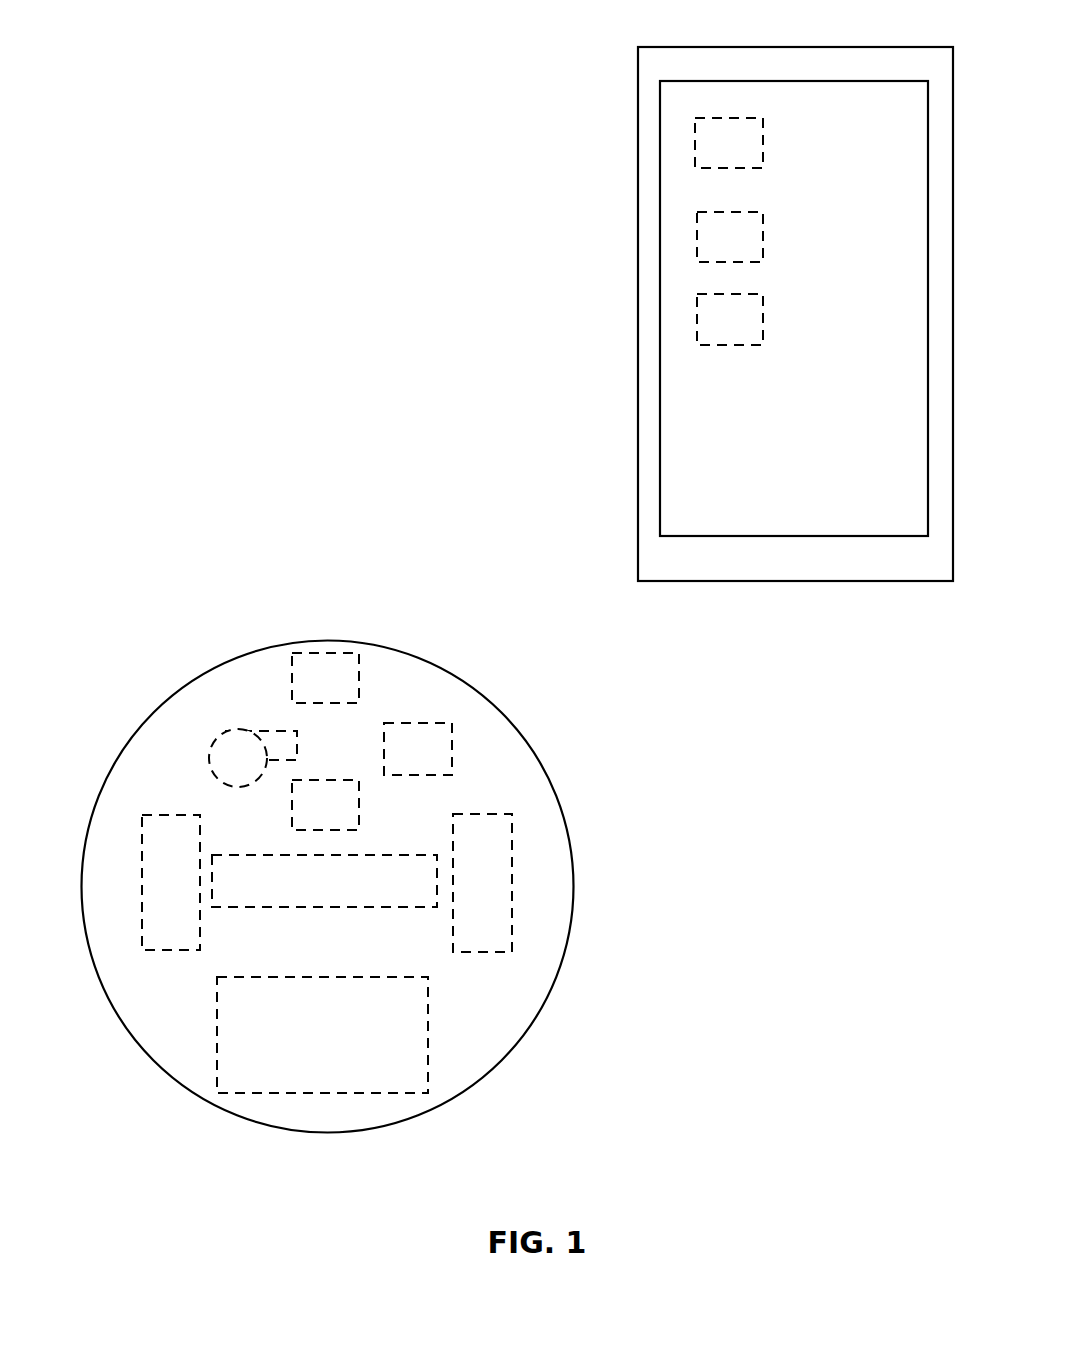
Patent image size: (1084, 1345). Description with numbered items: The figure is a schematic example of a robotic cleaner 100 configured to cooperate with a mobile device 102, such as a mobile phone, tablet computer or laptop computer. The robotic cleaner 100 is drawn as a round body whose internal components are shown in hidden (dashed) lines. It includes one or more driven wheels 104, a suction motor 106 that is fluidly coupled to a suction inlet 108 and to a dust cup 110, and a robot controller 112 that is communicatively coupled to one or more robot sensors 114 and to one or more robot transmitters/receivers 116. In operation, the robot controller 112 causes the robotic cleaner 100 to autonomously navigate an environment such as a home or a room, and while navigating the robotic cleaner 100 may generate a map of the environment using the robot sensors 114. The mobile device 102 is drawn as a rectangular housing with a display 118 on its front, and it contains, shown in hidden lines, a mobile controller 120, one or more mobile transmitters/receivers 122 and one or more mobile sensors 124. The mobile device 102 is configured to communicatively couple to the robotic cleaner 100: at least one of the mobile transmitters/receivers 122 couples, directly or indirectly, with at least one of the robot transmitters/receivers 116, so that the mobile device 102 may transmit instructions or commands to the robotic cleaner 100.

The robotic cleaner 100 is at (127, 625).
The mobile device 102 is at (537, 98).
The driven wheels 104 is at (172, 813).
The suction motor 106 is at (210, 758).
The suction inlet 108 is at (297, 907).
The dust cup 110 is at (217, 1010).
The robot controller 112 is at (292, 810).
The robot sensors 114 is at (292, 683).
The robot transmitters/receivers 116 is at (384, 728).
The display 118 is at (660, 452).
The mobile controller 120 is at (695, 152).
The mobile transmitters/receivers 122 is at (697, 243).
The mobile sensors 124 is at (697, 326).